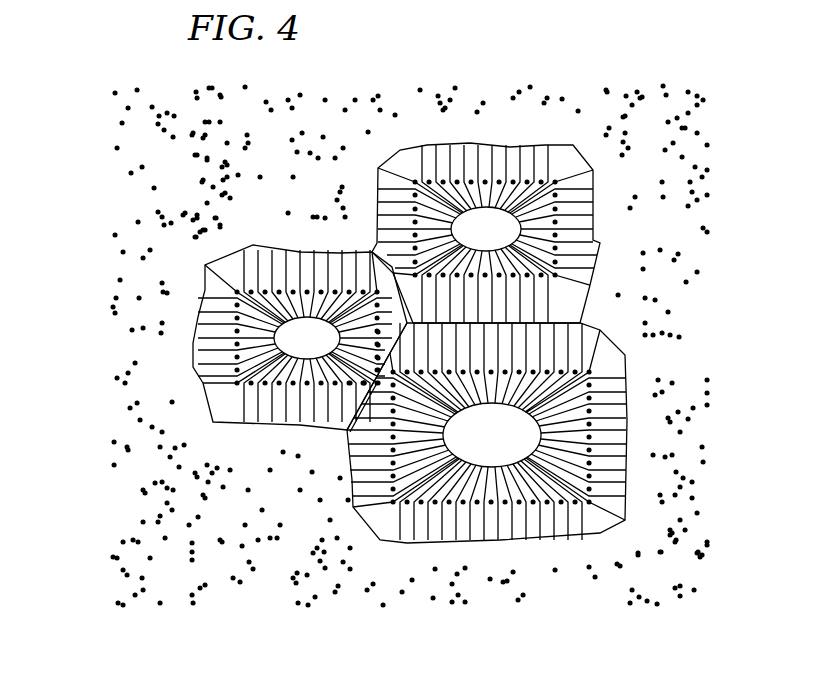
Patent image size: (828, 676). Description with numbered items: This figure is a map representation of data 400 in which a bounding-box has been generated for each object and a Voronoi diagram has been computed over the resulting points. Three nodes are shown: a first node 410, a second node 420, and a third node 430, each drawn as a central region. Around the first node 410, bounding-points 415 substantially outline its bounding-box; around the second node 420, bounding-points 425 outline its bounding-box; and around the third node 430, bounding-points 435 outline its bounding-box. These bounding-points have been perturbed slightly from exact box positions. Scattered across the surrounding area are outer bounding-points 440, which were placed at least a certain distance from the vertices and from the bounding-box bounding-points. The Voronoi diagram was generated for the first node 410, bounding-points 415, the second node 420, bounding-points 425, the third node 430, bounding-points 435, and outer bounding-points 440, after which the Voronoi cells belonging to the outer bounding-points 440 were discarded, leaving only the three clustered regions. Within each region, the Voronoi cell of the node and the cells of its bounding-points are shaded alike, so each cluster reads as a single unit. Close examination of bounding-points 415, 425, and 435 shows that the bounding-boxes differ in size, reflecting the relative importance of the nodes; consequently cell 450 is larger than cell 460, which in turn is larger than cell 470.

The cell layout diagram 400 is at (493, 67).
The node-1 410 is at (492, 435).
The bounding-points 415 is at (603, 500).
The node-2 420 is at (486, 229).
The bounding-points 425 is at (562, 282).
The node-3 430 is at (307, 338).
The bounding-points 435 is at (232, 390).
The outer bounding-points 440 is at (101, 87).
The cell 450 is at (625, 356).
The cell 460 is at (593, 170).
The cell 470 is at (215, 263).